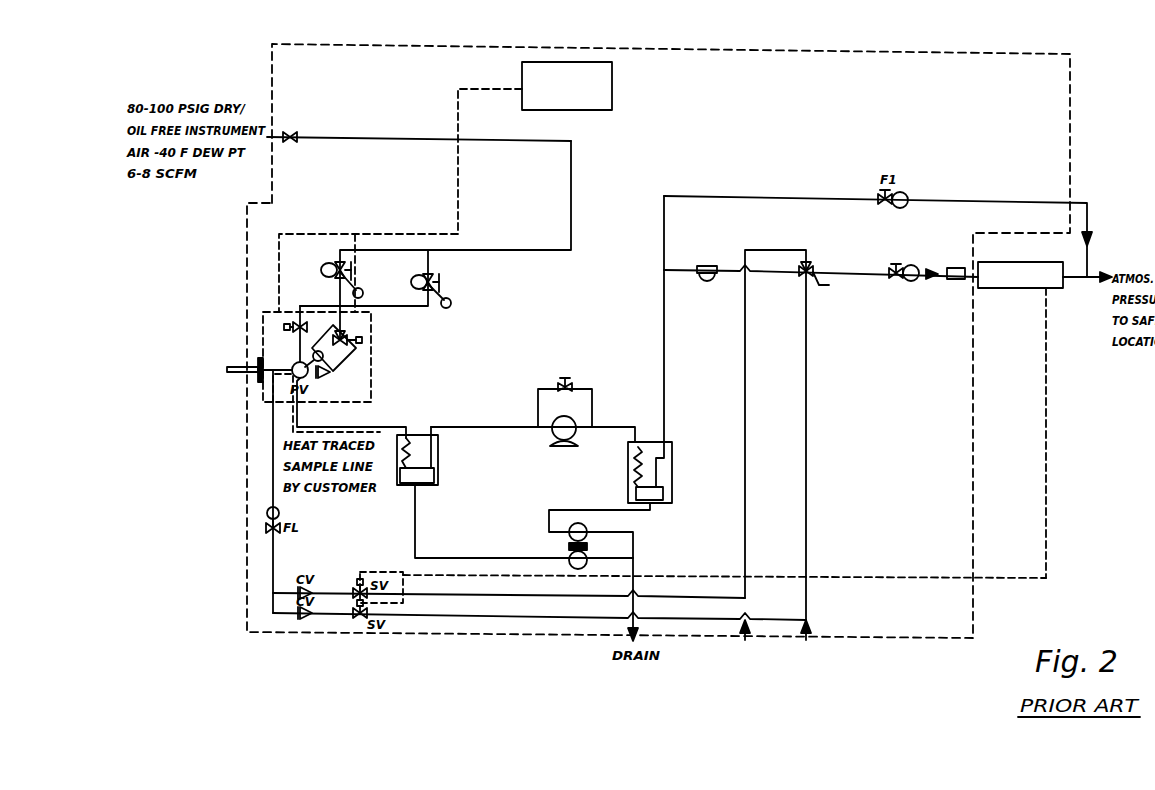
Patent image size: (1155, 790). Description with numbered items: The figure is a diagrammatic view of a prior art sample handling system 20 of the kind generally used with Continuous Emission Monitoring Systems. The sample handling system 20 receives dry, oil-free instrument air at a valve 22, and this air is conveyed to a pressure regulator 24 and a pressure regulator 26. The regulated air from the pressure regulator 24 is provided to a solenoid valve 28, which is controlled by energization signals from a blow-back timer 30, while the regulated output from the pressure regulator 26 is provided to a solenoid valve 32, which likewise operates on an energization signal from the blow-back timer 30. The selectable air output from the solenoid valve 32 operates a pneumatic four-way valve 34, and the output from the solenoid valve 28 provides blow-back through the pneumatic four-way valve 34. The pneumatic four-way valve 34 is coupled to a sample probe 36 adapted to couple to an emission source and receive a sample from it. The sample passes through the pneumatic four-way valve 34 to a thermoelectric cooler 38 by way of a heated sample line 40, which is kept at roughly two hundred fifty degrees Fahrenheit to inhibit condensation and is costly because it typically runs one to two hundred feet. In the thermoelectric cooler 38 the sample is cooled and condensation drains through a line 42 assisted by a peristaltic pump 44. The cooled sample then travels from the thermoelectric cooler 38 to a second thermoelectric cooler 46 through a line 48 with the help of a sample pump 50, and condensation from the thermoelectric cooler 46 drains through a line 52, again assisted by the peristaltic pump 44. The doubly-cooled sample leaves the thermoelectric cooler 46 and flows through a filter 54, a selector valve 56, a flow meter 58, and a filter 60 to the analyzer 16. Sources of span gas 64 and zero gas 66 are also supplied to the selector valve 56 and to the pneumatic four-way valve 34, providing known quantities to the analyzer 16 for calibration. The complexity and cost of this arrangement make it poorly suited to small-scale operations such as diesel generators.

The analyzer 16 is at (990, 289).
The sample handling system 20 is at (742, 47).
The valve 22 is at (287, 140).
The pressure regulator 24 is at (446, 283).
The pressure regulator 26 is at (328, 266).
The solenoid valve 28 is at (300, 318).
The blow-back timer 30 is at (612, 72).
The solenoid valve 32 is at (344, 350).
The pneumatic four-way valve 34 is at (330, 385).
The sample probe 36 is at (240, 366).
The thermoelectric cooler 38 is at (438, 474).
The heated sample line 40 is at (290, 418).
The line 42 is at (415, 527).
The peristaltic pump 44 is at (570, 546).
The thermoelectric cooler 46 is at (672, 483).
The line 48 is at (478, 427).
The sample pump 50 is at (563, 442).
The line 52 is at (650, 512).
The filter 54 is at (708, 262).
The selector valve 56 is at (814, 263).
The flow meter 58 is at (911, 281).
The filter 60 is at (950, 280).
The span gas 64 is at (737, 686).
The zero gas 66 is at (806, 688).